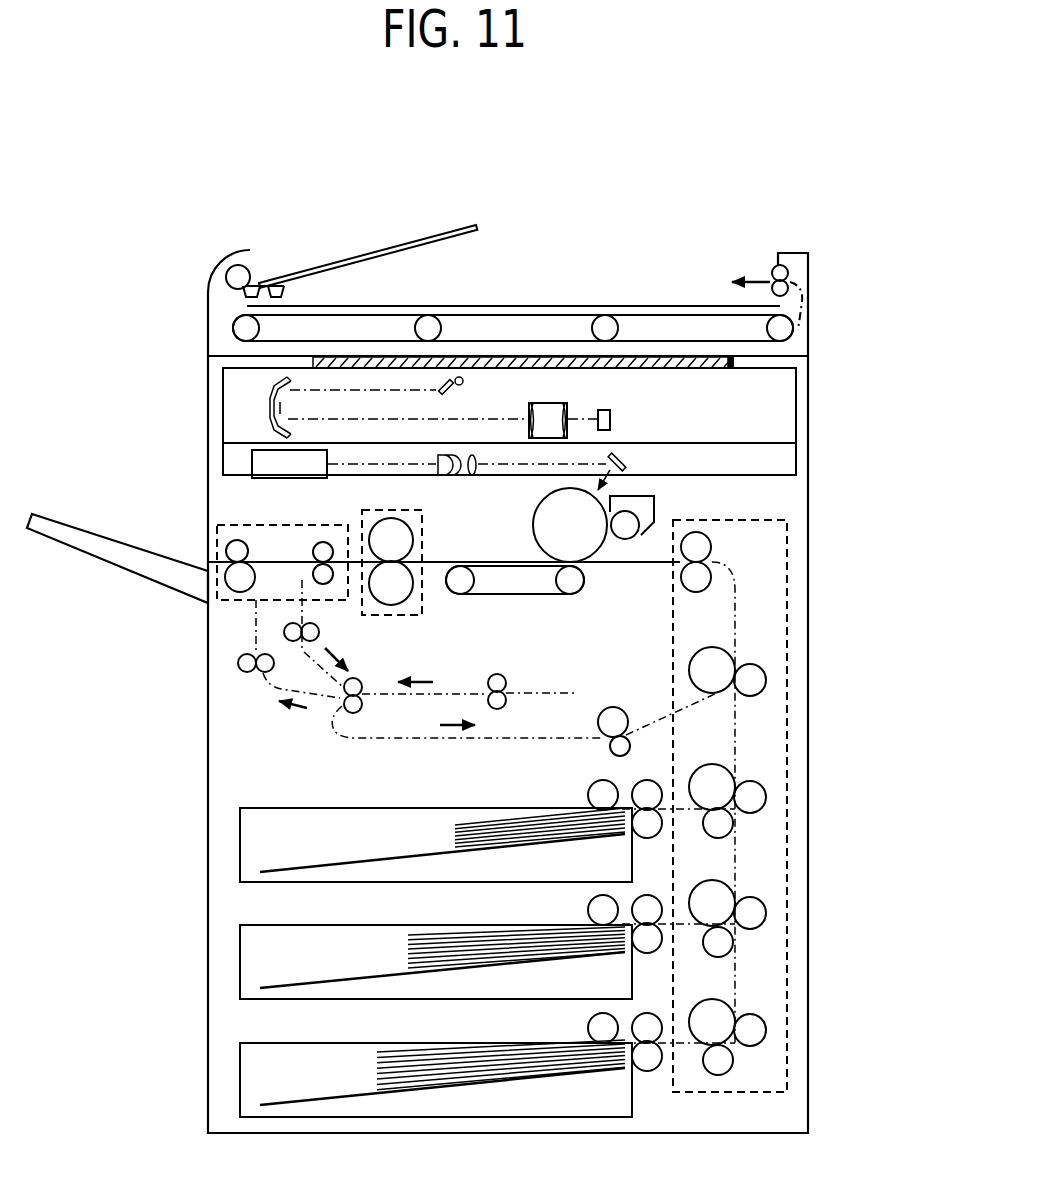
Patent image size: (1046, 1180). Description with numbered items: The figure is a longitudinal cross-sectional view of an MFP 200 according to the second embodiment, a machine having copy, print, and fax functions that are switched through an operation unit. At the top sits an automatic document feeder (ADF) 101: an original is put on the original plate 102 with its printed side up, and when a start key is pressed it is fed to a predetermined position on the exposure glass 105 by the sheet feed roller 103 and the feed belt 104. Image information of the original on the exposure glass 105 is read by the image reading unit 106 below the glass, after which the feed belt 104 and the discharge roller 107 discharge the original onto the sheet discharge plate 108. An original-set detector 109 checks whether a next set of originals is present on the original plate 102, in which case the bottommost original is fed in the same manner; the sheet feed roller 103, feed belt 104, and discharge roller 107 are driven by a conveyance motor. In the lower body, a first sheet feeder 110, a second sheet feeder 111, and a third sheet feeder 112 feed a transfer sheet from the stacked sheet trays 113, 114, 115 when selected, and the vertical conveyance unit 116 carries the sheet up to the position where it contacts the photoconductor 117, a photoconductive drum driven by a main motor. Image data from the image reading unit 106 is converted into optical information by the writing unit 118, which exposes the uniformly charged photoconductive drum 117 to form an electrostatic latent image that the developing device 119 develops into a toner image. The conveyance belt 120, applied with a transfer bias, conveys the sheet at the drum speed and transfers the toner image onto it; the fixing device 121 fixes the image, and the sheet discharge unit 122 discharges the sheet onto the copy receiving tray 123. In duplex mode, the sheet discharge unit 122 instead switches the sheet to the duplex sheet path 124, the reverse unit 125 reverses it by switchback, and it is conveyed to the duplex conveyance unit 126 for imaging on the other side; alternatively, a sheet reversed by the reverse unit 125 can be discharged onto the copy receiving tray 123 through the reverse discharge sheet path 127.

The MFP 200 is at (776, 154).
The automatic document feeder 101 is at (802, 340).
The original plate 102 is at (362, 252).
The sheet feed roller 103 is at (247, 268).
The feed belt 104 is at (562, 316).
The exposure glass 105 is at (500, 356).
The image reading unit 106 is at (797, 418).
The discharge roller 107 is at (769, 271).
The sheet discharge plate 108 is at (633, 305).
The original-set detector 109 is at (284, 291).
The first sheet feeder 110 is at (583, 782).
The second sheet feeder 111 is at (583, 897).
The third sheet feeder 112 is at (583, 1015).
The sheet tray 113 is at (240, 845).
The sheet tray 114 is at (240, 963).
The sheet tray 115 is at (240, 1083).
The vertical conveyance unit 116 is at (787, 560).
The photoconductor 117 is at (535, 509).
The writing unit 118 is at (797, 463).
The developing device 119 is at (655, 500).
The conveyance belt 120 is at (545, 596).
The fixing device 121 is at (422, 548).
The sheet discharge unit 122 is at (274, 520).
The copy receiving tray 123 is at (69, 526).
The duplex sheet path 124 is at (328, 643).
The reverse unit 125 is at (452, 683).
The duplex conveyance unit 126 is at (399, 751).
The reverse discharge sheet path 127 is at (244, 637).